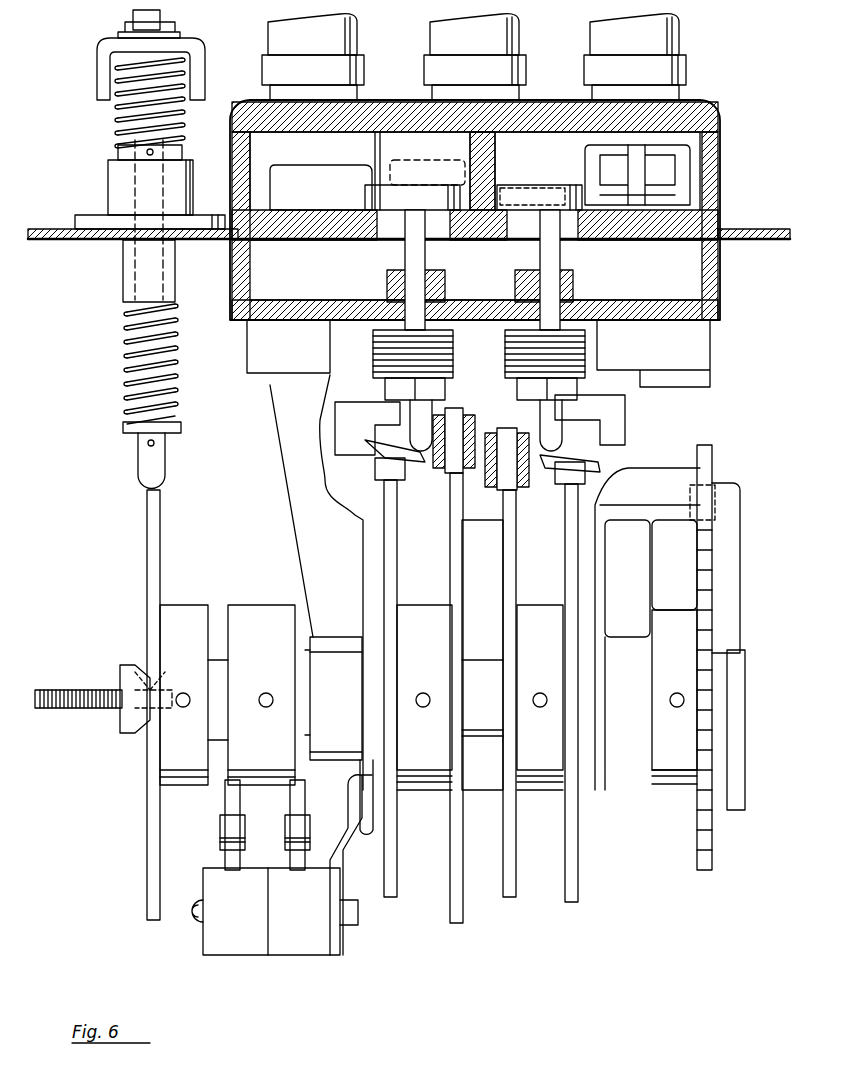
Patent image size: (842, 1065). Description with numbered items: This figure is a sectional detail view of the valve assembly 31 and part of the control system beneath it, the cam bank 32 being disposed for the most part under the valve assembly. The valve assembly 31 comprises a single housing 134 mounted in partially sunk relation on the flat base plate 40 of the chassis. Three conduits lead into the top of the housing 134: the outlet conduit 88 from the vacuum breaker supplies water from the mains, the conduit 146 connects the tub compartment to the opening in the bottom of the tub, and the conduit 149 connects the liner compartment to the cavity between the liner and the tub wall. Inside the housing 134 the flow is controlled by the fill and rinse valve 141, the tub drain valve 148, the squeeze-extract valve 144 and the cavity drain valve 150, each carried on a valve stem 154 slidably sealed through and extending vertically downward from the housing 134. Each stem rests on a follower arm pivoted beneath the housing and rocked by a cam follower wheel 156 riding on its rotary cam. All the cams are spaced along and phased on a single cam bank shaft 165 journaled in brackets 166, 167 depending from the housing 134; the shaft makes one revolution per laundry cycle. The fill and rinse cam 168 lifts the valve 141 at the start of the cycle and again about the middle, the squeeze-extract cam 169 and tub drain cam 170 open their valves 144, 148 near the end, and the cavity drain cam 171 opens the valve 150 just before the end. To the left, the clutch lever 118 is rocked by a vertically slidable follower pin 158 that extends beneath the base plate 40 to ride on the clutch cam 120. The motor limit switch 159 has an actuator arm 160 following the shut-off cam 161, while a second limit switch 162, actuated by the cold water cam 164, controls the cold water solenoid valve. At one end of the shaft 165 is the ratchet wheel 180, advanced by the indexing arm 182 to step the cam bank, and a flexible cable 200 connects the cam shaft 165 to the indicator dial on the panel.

The clutch lever 118 is at (100, 77).
The tub conduit 146 is at (357, 36).
The outlet conduit 88 is at (520, 35).
The liner conduit 149 is at (682, 42).
The valve assembly 31 is at (724, 96).
The valve housing 134 is at (720, 125).
The fill and rinse valve 141 is at (422, 160).
The tub drain valve 148 is at (420, 190).
The cavity drain valve 150 is at (510, 188).
The squeeze-extract valve 144 is at (528, 185).
The base plate 40 is at (752, 238).
The valve stem 154 is at (406, 258).
The cam follower wheel 156 is at (460, 418).
The follower pin 158 is at (145, 452).
The clutch cam 120 is at (150, 545).
The flexible cable 200 is at (76, 690).
The bracket 167 is at (332, 755).
The cam bank shaft 165 is at (487, 732).
The bracket 166 is at (640, 755).
The indexing arm 182 is at (730, 792).
The ratchet wheel 180 is at (713, 825).
The cavity drain cam 171 is at (578, 852).
The tub drain cam 170 is at (398, 890).
The fill and rinse cam 168 is at (453, 923).
The squeeze-extract cam 169 is at (510, 897).
The cam bank 32 is at (559, 911).
The shut-off cam 161 is at (225, 802).
The cold water cam 164 is at (302, 802).
The actuator cam 160 is at (226, 832).
The limit switch 159 is at (228, 950).
The second limit switch 162 is at (325, 950).